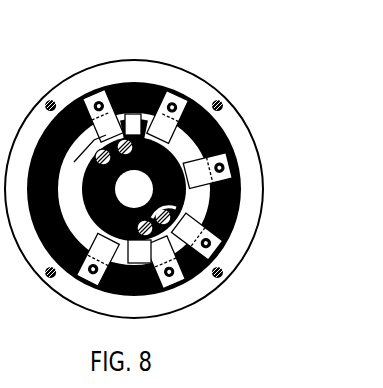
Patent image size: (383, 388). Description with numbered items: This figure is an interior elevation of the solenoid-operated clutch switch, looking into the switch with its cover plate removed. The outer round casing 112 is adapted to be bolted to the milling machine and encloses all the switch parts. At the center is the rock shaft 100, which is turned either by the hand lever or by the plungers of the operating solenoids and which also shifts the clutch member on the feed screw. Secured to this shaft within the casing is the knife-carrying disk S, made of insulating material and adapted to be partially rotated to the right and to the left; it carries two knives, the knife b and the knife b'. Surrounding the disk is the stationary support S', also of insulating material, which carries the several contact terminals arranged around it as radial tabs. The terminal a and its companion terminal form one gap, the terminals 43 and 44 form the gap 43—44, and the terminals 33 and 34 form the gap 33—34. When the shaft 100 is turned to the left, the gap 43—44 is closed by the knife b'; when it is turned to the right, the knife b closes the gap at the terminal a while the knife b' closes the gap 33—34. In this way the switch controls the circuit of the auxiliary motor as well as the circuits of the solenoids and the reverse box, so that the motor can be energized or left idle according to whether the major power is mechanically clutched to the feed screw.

The casing 112 is at (206, 75).
The stationary support S' is at (134, 153).
The knife-carrying disk S is at (125, 177).
The rock shaft 100 is at (134, 189).
The terminal a is at (104, 131).
The knife b is at (131, 126).
The knife b' is at (139, 251).
The terminal 33 is at (98, 259).
The terminal 34 is at (165, 262).
The terminal 43 is at (197, 236).
The terminal 44 is at (207, 171).